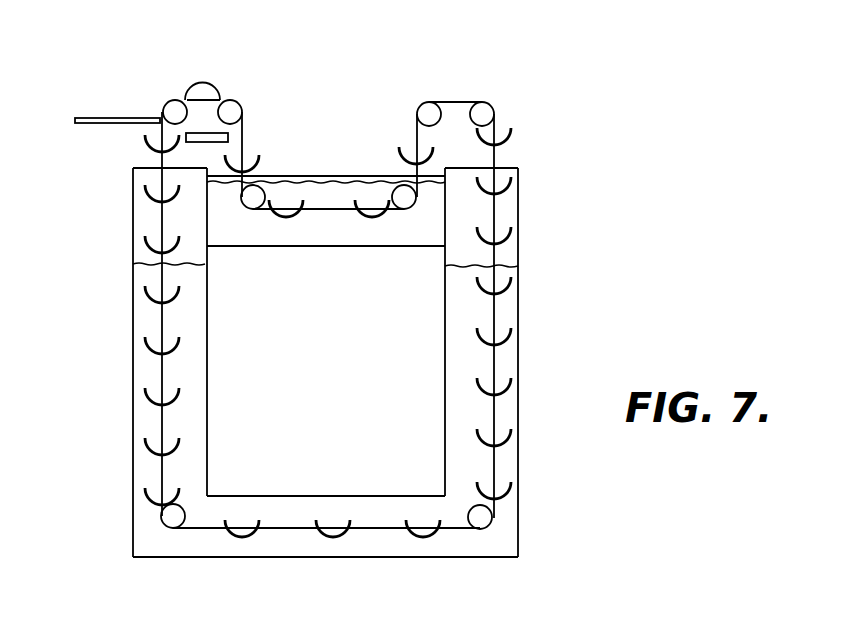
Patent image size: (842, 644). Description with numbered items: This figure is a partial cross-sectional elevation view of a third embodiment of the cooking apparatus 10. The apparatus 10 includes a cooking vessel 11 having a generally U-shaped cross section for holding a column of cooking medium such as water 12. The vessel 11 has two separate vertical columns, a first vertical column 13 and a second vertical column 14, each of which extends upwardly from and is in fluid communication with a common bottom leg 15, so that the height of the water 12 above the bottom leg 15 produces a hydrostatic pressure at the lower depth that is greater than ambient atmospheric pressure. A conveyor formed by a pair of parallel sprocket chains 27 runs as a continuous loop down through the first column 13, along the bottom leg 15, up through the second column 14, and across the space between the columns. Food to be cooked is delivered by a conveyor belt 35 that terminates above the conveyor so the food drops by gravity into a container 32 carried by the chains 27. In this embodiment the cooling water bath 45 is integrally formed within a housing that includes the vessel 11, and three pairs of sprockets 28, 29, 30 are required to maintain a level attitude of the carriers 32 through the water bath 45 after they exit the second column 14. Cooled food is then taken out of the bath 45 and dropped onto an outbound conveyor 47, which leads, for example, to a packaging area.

The apparatus 10 is at (608, 292).
The cooking vessel 11 is at (510, 437).
The water 12 is at (200, 333).
The first vertical column 13 is at (143, 307).
The second vertical column 14 is at (503, 313).
The bottom leg 15 is at (285, 548).
The sprocket chains 27 is at (493, 127).
The sprocket 28 is at (482, 112).
The sprocket 29 is at (232, 98).
The sprocket 30 is at (258, 195).
The container 32 is at (510, 390).
The conveyor belt 35 is at (120, 118).
The cooling water bath 45 is at (427, 230).
The outbound conveyor 47 is at (242, 133).